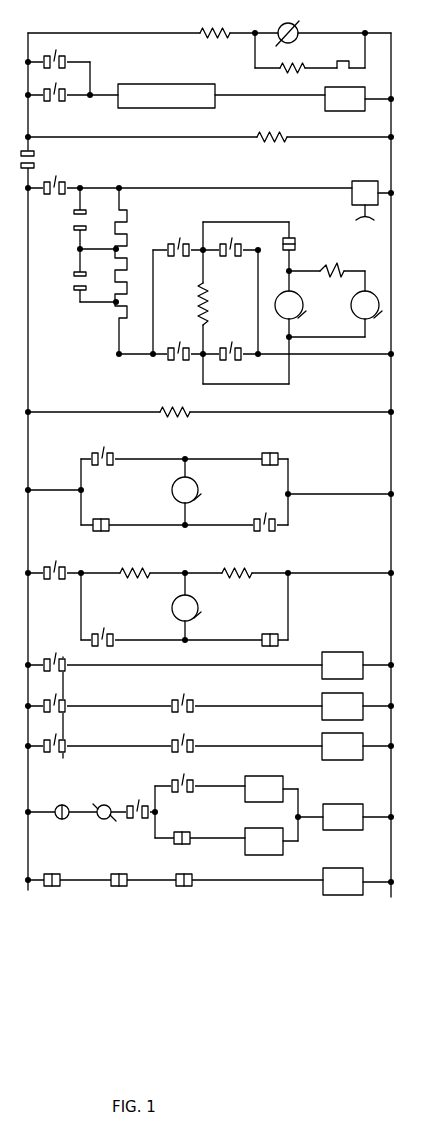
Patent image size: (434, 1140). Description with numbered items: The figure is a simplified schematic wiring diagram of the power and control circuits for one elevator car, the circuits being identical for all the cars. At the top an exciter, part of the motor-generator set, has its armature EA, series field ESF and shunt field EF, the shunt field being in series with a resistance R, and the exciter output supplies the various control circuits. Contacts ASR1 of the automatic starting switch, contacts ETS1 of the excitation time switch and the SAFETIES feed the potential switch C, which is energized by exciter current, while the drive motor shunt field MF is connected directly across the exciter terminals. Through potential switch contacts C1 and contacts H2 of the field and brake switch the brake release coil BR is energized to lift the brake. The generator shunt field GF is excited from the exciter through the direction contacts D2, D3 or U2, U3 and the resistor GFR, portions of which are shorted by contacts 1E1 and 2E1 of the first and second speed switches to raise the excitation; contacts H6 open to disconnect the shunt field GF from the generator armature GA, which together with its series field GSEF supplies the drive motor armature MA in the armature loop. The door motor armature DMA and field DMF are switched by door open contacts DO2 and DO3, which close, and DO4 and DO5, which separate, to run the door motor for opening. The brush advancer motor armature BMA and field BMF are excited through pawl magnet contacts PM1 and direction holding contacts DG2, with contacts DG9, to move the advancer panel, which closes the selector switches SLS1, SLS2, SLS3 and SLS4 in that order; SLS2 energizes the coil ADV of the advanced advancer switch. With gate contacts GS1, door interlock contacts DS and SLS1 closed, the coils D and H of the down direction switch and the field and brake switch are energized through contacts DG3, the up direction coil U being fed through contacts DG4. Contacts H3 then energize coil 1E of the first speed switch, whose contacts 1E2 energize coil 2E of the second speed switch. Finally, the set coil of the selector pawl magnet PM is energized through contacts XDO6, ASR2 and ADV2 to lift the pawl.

The exciter series field ESF is at (215, 23).
The exciter armature EA is at (294, 24).
The exciter shunt field EF is at (284, 66).
The resistor R is at (343, 55).
The automatic starting switch contacts ASR1 is at (62, 54).
The excitation time switch contacts ETS1 is at (53, 87).
The safety switches SAFETIES is at (166, 96).
The potential switch C is at (345, 99).
The elevator drive motor shunt field MF is at (272, 127).
The potential switch contacts C1 is at (36, 165).
The field and brake switch contacts H2 is at (62, 190).
The brake release coil BR is at (365, 200).
The first speed switch contacts 1E1 is at (72, 213).
The generator field resistor GFR is at (128, 249).
The second speed switch contacts 2E1 is at (72, 290).
The up direction switch contacts U2 is at (179, 243).
The down direction switch contacts D3 is at (231, 241).
The field and brake switch contacts H6 is at (295, 244).
The generator series field GSEF is at (340, 261).
The generator shunt field GF is at (215, 304).
The elevator drive motor armature MA is at (290, 305).
The generator armature GA is at (366, 305).
The down direction switch contacts D2 is at (178, 346).
The up direction switch contacts U3 is at (231, 346).
The door motor field DMF is at (170, 402).
The door open switch contacts DO2 is at (107, 451).
The door open switch contacts DO5 is at (268, 450).
The door motor armature DMA is at (204, 487).
The door open switch contacts DO4 is at (104, 516).
The door open switch contacts DO3 is at (263, 517).
The pawl magnet contacts PM1 is at (54, 564).
The brush advancer motor field BMF is at (184, 563).
The brush advancer motor armature BMA is at (204, 605).
The direction holding switch contacts DG9 is at (105, 631).
The direction holding switch contacts DG2 is at (263, 631).
The selector switch SLS2 is at (52, 656).
The advanced advancer switch coil ADV is at (342, 665).
The selector switch SLS3 is at (52, 697).
The field and brake switch contacts H3 is at (183, 697).
The first speed switch coil 1E is at (342, 706).
The selector switch SLS4 is at (50, 737).
The first speed switch contacts 1E2 is at (183, 737).
The second speed switch coil 2E is at (342, 746).
The direction holding switch contacts DG4 is at (184, 777).
The up direction switch coil U is at (264, 789).
The direction holding switch contacts DG3 is at (181, 830).
The down direction switch coil D is at (264, 841).
The door interlock contacts DS is at (57, 808).
The gate contacts GS1 is at (97, 806).
The selector switch SLS1 is at (135, 803).
The field and brake switch coil H is at (343, 817).
The MG start and door open switch contacts XDO6 is at (51, 871).
The automatic starting switch contacts ASR2 is at (115, 871).
The advanced advancer switch contacts ADV2 is at (180, 871).
The selector pawl magnet PM is at (343, 871).